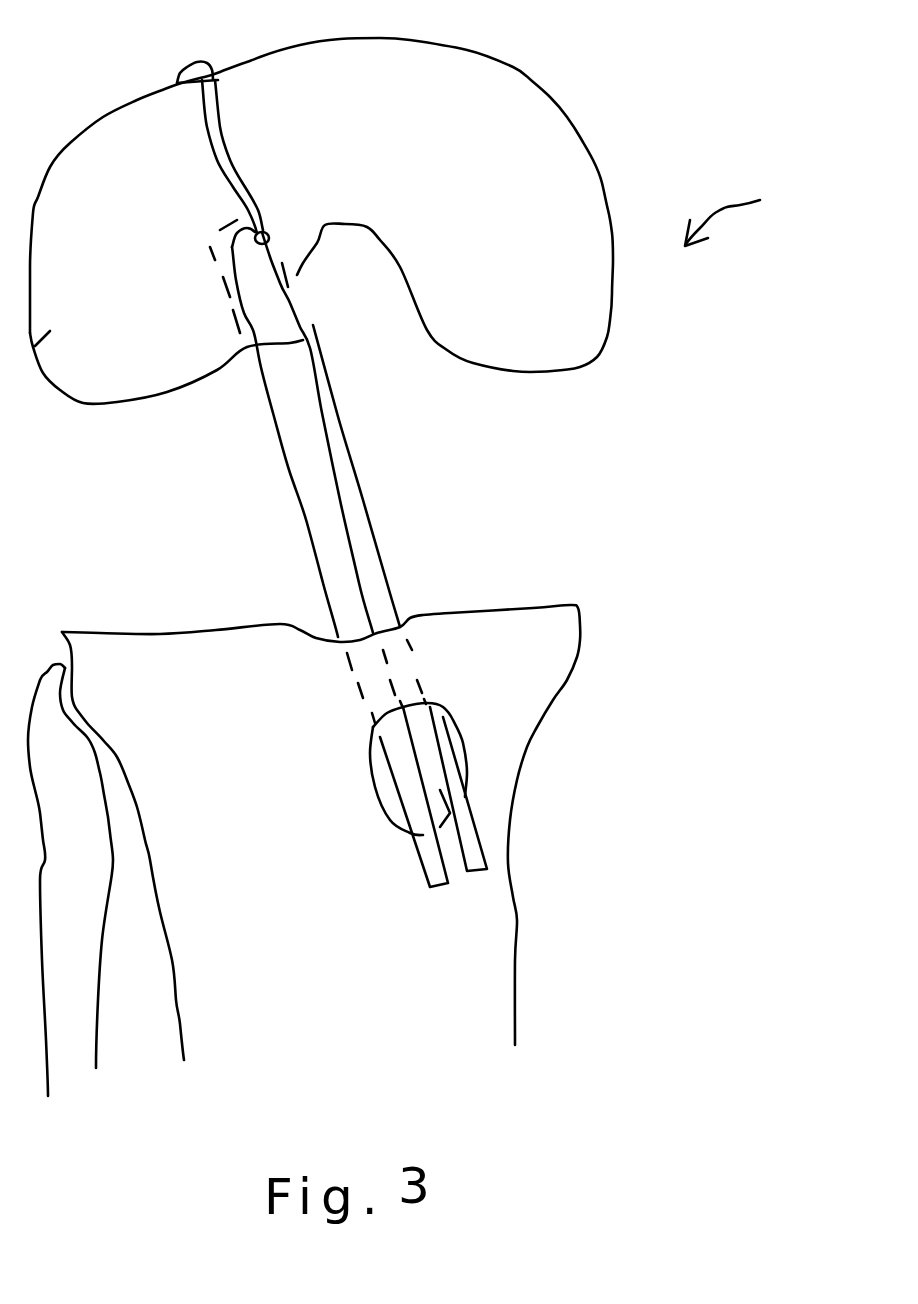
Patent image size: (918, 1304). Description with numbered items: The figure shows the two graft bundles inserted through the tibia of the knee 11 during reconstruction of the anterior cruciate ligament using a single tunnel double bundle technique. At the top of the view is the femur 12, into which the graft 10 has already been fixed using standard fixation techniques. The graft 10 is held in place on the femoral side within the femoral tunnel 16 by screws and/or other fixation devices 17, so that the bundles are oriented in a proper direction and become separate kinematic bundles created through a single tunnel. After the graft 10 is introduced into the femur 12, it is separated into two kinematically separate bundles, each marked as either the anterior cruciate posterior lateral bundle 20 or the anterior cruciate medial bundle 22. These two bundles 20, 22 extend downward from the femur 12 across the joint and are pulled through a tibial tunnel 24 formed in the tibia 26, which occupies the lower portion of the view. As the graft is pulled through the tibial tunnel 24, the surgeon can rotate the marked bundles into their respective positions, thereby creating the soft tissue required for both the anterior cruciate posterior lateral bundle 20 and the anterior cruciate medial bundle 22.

The graft 10 is at (280, 327).
The knee 11 is at (745, 214).
The femur 12 is at (505, 92).
The femoral tunnel 16 is at (268, 236).
The fixation devices 17 is at (202, 63).
The anterior cruciate posterior lateral bundle 20 is at (340, 472).
The anterior cruciate medial bundle 22 is at (310, 503).
The tibial tunnel 24 is at (452, 735).
The tibia 26 is at (560, 635).